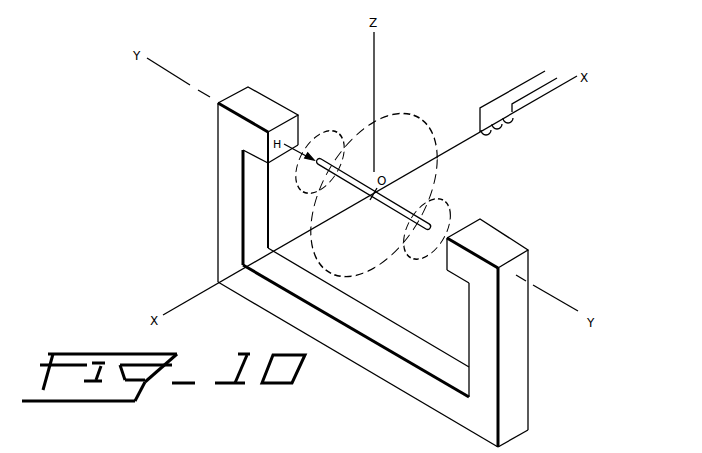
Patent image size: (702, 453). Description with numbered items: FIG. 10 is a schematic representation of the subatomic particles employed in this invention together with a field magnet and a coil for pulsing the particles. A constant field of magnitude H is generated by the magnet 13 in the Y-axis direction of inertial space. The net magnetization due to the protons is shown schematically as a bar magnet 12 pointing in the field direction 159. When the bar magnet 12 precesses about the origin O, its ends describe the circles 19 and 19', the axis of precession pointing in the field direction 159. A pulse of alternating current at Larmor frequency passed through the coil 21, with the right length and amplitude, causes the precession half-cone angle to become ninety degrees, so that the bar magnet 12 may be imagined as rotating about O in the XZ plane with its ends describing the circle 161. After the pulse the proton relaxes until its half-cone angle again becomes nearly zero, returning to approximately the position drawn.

The bar magnet 12 is at (351, 186).
The magnet 13 is at (227, 200).
The circle 19 is at (310, 164).
The circle 19' is at (441, 229).
The coil 21 is at (498, 133).
The field direction 159 is at (302, 152).
The circle 161 is at (422, 116).